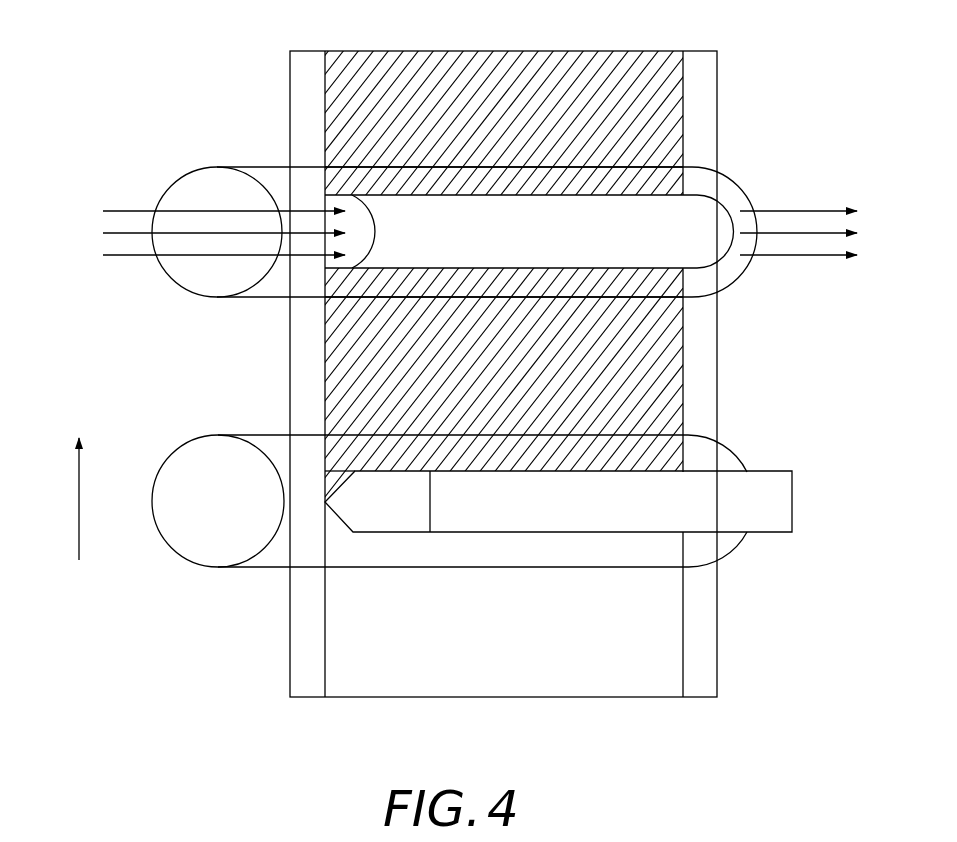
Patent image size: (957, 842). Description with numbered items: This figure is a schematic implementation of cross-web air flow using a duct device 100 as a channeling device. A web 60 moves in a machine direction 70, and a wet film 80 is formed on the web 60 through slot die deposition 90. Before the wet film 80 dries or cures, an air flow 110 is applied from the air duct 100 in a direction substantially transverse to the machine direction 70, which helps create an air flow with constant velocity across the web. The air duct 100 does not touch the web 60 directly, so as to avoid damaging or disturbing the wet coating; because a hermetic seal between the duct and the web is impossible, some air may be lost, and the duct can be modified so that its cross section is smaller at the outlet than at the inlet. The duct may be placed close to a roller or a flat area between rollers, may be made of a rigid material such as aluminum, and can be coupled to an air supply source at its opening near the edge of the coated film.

The web 60 is at (698, 632).
The machine direction 70 is at (79, 500).
The wet film 80 is at (667, 428).
The slot die deposition 90 is at (777, 510).
The air duct 100 is at (632, 226).
The air flow 110 is at (120, 210).